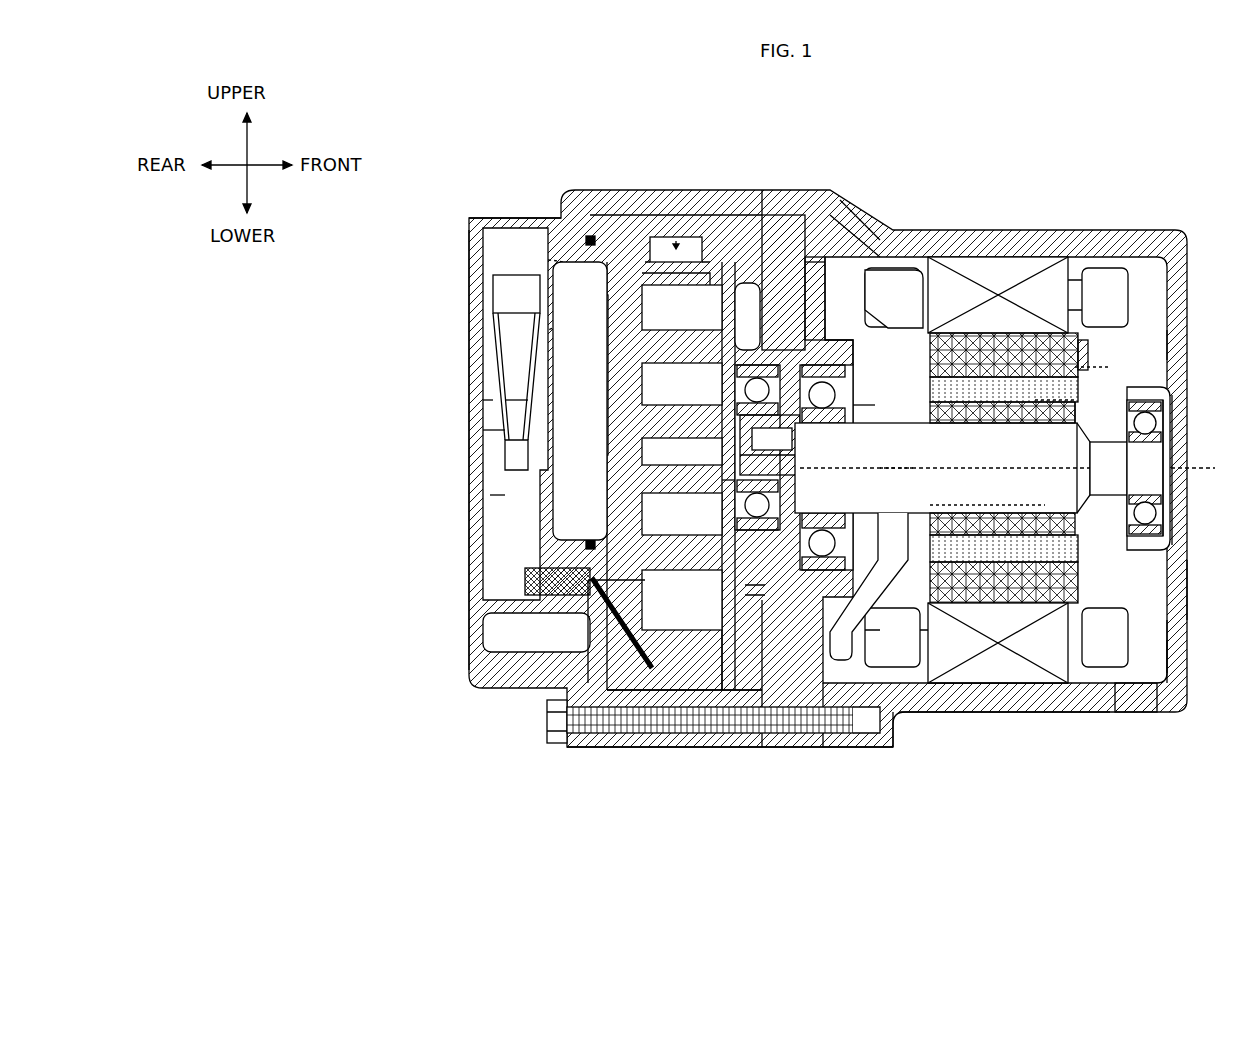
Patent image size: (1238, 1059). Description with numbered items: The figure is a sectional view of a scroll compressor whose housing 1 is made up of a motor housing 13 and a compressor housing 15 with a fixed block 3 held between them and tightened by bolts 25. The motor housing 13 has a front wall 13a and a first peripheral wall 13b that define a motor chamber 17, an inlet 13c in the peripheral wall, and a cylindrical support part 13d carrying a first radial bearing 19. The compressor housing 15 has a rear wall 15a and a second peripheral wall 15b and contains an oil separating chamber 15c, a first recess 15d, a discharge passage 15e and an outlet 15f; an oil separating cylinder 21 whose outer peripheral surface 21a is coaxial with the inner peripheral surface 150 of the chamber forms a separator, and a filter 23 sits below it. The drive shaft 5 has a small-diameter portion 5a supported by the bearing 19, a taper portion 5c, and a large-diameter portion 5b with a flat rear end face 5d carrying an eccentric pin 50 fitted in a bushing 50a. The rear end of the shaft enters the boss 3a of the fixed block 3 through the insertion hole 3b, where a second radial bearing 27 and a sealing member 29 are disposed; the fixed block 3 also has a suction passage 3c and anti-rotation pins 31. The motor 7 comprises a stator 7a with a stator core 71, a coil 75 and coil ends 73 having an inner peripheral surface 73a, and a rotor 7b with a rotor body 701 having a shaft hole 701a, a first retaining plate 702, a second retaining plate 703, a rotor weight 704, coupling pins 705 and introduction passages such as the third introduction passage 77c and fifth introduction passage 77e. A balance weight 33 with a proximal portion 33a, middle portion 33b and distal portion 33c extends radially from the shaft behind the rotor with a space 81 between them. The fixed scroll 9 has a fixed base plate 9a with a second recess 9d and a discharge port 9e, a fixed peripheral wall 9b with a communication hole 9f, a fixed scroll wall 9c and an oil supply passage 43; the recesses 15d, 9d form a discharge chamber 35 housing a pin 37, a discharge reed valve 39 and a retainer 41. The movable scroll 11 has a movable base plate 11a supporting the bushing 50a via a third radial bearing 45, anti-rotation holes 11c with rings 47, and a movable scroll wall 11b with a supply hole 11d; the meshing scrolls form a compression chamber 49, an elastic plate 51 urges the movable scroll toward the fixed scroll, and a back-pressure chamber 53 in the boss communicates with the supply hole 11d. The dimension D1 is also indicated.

The housing 1 is at (593, 182).
The fixed block 3 is at (790, 188).
The boss 3a is at (815, 345).
The insertion hole 3b is at (855, 380).
The suction passage 3c is at (822, 217).
The drive shaft 5 is at (1172, 495).
The small-diameter portion 5a is at (1160, 455).
The large-diameter portion 5b is at (880, 390).
The taper portion 5c is at (1125, 505).
The rear end face 5d is at (785, 520).
The motor 7 is at (1078, 575).
The stator 7a is at (988, 670).
The rotor 7b is at (1020, 300).
The fixed scroll 9 is at (622, 215).
The fixed base plate 9a is at (548, 292).
The fixed peripheral wall 9b is at (768, 192).
The fixed scroll wall 9c is at (660, 335).
The second recess 9d is at (588, 235).
The discharge port 9e is at (630, 460).
The communication hole 9f is at (660, 240).
The movable scroll 11 is at (705, 250).
The movable base plate 11a is at (722, 395).
The movable scroll wall 11b is at (703, 332).
The anti-rotation holes 11c is at (712, 690).
The supply hole 11d is at (680, 492).
The motor housing 13 is at (1115, 228).
The front wall 13a is at (1188, 588).
The first peripheral wall 13b is at (1040, 712).
The inlet 13c is at (1120, 712).
The support part 13d is at (1177, 370).
The compressor housing 15 is at (468, 618).
The rear wall 15a is at (469, 247).
The second peripheral wall 15b is at (645, 748).
The oil separating chamber 15c is at (500, 495).
The first recess 15d is at (505, 455).
The discharge passage 15e is at (483, 400).
The outlet 15f is at (488, 218).
The inner peripheral surface 150 is at (483, 430).
The motor chamber 17 is at (894, 316).
The first radial bearing 19 is at (1155, 680).
The oil separating cylinder 21 is at (500, 345).
The outer peripheral surface 21a is at (505, 390).
The filter 23 is at (525, 582).
The bolts 25 is at (547, 720).
The second radial bearing 27 is at (830, 395).
The sealing member 29 is at (1005, 468).
The anti-rotation pins 31 is at (775, 745).
The balance weight 33 is at (832, 618).
The proximal portion 33a is at (918, 480).
The middle portion 33b is at (885, 745).
The distal portion 33c is at (838, 725).
The discharge chamber 35 is at (578, 516).
The pin 37 is at (608, 305).
The discharge reed valve 39 is at (606, 440).
The retainer 41 is at (605, 410).
The oil supply passage 43 is at (620, 630).
The third radial bearing 45 is at (747, 316).
The rings 47 is at (745, 690).
The compression chamber 49 is at (700, 527).
The eccentric pin 50 is at (795, 452).
The bushing 50a is at (792, 470).
The elastic plate 51 is at (820, 262).
The back-pressure chamber 53 is at (783, 282).
The stator core 71 is at (1008, 690).
The coil ends 73 is at (908, 683).
The inner peripheral surface 73a is at (922, 642).
The coil 75 is at (1170, 648).
The third introduction passage 77c is at (1050, 412).
The fifth introduction passage 77e is at (1090, 635).
The space 81 is at (950, 510).
The rotor body 701 is at (1005, 413).
The shaft hole 701a is at (1075, 410).
The first retaining plate 702 is at (1075, 290).
The second retaining plate 703 is at (955, 300).
The rotor weight 704 is at (1100, 312).
The coupling pins 705 is at (1090, 345).
The dimension D1 is at (1114, 365).